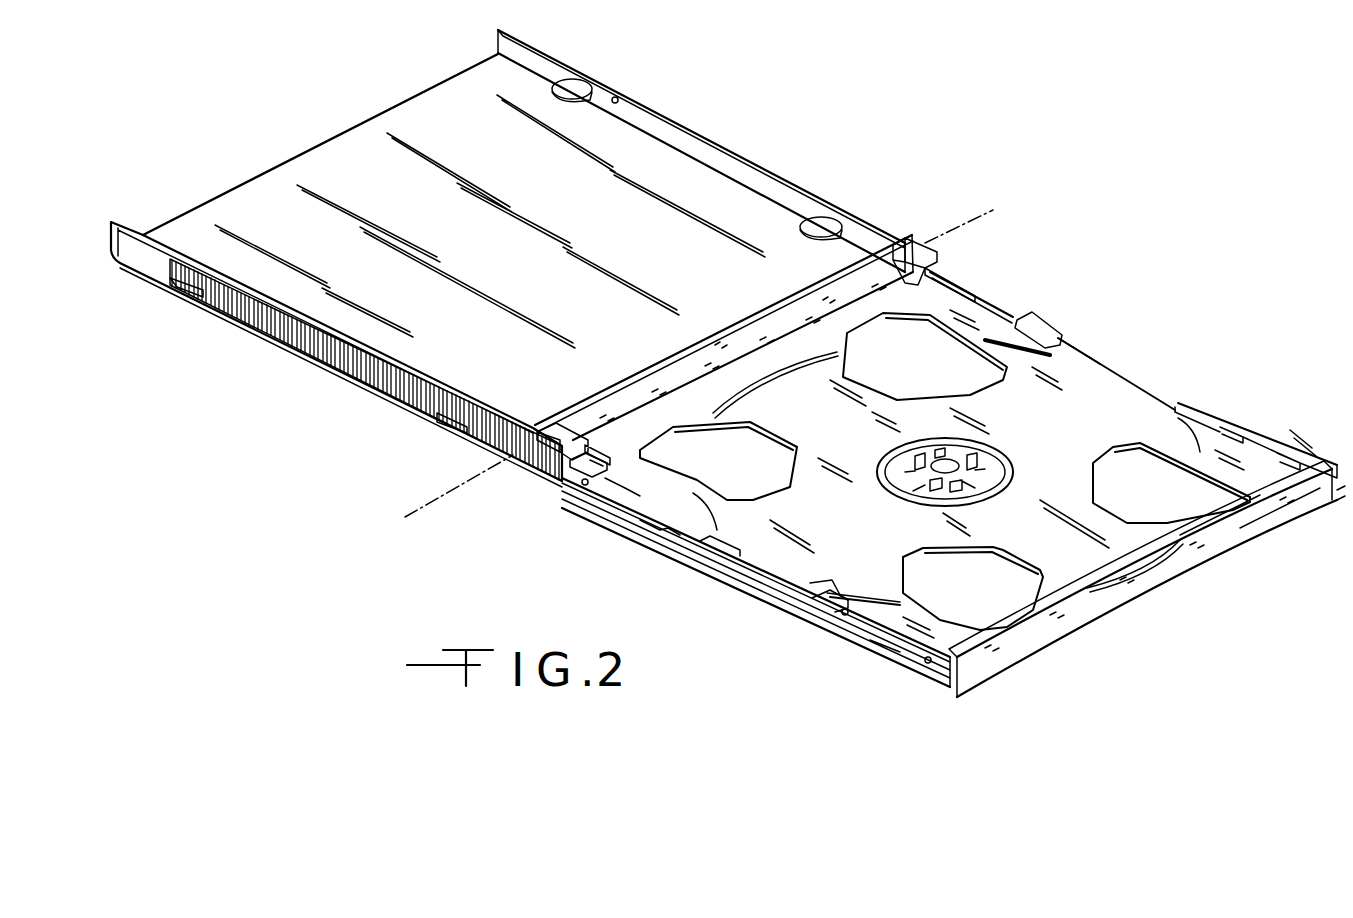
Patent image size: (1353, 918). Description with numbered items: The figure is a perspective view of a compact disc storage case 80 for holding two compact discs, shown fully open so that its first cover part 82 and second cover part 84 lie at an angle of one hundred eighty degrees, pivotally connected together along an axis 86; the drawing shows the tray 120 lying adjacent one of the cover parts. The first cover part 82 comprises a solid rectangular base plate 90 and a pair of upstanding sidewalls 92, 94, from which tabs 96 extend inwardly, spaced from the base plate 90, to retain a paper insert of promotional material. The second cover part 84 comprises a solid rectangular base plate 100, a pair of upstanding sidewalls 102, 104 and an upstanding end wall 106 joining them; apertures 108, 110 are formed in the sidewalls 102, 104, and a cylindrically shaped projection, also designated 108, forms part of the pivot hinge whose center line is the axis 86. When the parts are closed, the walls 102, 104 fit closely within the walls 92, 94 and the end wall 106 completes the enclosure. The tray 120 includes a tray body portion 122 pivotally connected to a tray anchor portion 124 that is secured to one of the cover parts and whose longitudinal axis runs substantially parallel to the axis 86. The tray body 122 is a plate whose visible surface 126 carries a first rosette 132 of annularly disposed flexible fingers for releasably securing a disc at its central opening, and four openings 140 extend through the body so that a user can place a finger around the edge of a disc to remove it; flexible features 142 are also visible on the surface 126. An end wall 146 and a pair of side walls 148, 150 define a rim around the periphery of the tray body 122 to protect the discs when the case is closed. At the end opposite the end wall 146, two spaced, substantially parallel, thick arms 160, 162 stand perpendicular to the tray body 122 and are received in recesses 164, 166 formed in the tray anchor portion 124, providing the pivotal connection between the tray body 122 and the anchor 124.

The case 80 is at (371, 545).
The first cover part 82 is at (245, 173).
The second cover part 84 is at (1021, 663).
The axis 86 is at (985, 212).
The base plate 90 is at (343, 150).
The sidewall 92 is at (310, 343).
The sidewall 94 is at (665, 113).
The tabs 96 is at (570, 90).
The base plate 100 is at (1130, 607).
The sidewall 102 is at (598, 490).
The sidewall 104 is at (975, 296).
The end wall 106 is at (1210, 558).
The aperture / cylindrical projection 108 is at (582, 490).
The aperture 110 is at (845, 617).
The tray 120 is at (781, 546).
The tray body portion 122 is at (1090, 407).
The tray anchor portion 124 is at (838, 292).
The surface 126 is at (860, 536).
The first rosette 132 is at (995, 489).
The openings 140 is at (940, 392).
The leaf springs 142 is at (1010, 343).
The end wall 146 is at (1287, 512).
The side wall 148 is at (810, 615).
The side wall 150 is at (1065, 330).
The arm 160 is at (575, 483).
The arm 162 is at (948, 270).
The recess 164 is at (576, 428).
The recess 166 is at (893, 243).